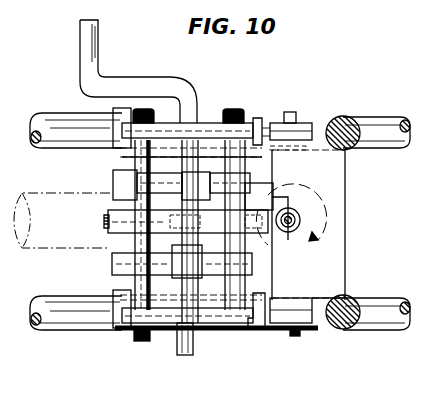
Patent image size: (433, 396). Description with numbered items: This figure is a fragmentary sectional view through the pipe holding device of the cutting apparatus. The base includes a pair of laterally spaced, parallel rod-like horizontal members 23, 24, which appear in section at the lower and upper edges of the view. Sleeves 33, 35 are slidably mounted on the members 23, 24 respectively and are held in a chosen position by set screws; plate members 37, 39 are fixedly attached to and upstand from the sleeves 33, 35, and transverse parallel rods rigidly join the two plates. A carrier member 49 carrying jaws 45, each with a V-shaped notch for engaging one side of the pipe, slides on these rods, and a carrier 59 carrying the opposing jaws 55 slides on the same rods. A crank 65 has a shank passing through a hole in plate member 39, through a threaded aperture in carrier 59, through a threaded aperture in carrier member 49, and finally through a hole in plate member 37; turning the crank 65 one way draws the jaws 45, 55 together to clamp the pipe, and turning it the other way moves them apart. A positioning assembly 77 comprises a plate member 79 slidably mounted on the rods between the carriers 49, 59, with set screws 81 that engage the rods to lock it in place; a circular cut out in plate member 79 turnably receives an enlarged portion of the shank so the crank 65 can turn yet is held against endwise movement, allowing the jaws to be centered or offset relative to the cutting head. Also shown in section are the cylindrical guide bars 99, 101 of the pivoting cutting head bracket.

The crank 65 is at (58, 64).
The plate member 39 is at (212, 126).
The sleeve 35 is at (258, 122).
The guide bar 101 is at (350, 118).
The horizontal member 24 is at (386, 150).
The carrier 59 is at (258, 198).
The jaws 55 is at (118, 196).
The plate member 79 is at (108, 215).
The set screws 81 is at (104, 229).
The positioning assembly 77 is at (78, 231).
The carrier member 49 is at (113, 258).
The jaws 45 is at (263, 233).
The plate member 37 is at (212, 320).
The sleeve 33 is at (258, 332).
The guide bar 99 is at (341, 330).
The horizontal member 23 is at (373, 334).